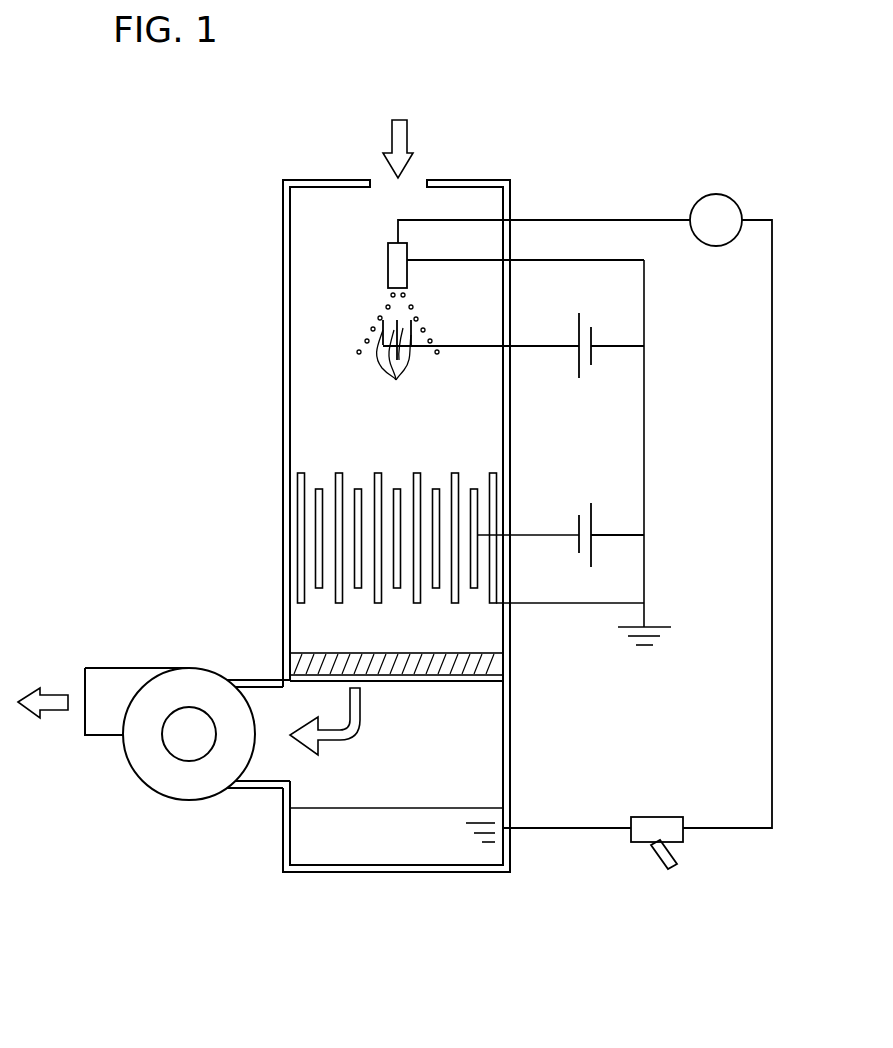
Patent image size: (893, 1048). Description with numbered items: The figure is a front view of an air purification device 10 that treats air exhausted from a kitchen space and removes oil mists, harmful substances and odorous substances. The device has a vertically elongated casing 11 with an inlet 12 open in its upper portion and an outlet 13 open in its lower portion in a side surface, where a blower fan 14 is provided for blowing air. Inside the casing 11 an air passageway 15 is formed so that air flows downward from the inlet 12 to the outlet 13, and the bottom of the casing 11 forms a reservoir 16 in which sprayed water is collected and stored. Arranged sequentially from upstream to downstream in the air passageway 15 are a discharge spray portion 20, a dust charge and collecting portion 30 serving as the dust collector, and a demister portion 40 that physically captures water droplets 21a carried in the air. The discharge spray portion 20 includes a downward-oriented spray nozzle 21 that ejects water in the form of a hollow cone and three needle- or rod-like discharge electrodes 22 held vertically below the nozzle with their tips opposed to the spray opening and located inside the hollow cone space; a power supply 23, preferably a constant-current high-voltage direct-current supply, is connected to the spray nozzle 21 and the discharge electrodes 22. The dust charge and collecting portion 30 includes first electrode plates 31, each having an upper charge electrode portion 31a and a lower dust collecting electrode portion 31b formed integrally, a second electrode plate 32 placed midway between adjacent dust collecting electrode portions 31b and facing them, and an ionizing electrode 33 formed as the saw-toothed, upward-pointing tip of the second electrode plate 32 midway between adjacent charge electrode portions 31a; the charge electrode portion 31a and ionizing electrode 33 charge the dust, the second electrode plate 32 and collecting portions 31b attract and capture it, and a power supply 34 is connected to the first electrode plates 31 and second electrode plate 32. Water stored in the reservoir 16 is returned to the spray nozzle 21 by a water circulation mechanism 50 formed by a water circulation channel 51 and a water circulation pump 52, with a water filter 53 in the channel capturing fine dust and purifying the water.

The air purification device 10 is at (477, 71).
The casing 11 is at (283, 222).
The inlet 12 is at (378, 178).
The outlet 13 is at (265, 700).
The blower fan 14 is at (165, 798).
The air passageway 15 is at (483, 426).
The reservoir 16 is at (372, 852).
The discharge spray portion 20 is at (456, 319).
The spray nozzle 21 is at (388, 265).
The water droplets 21a is at (410, 307).
The discharge electrode 22 is at (468, 367).
The power supply 23 is at (595, 338).
The dust charge and collecting portion 30 is at (402, 521).
The first electrode plate 31 is at (375, 487).
The charge electrode portion 31a is at (383, 486).
The dust collecting electrode portion 31b is at (383, 592).
The second electrode plate 32 is at (318, 582).
The ionizing electrode 33 is at (300, 488).
The power supply 34 is at (595, 520).
The demister portion 40 is at (477, 653).
The water circulation mechanism 50 is at (635, 222).
The water circulation channel 51 is at (772, 492).
The water circulation pump 52 is at (716, 194).
The water filter 53 is at (660, 817).